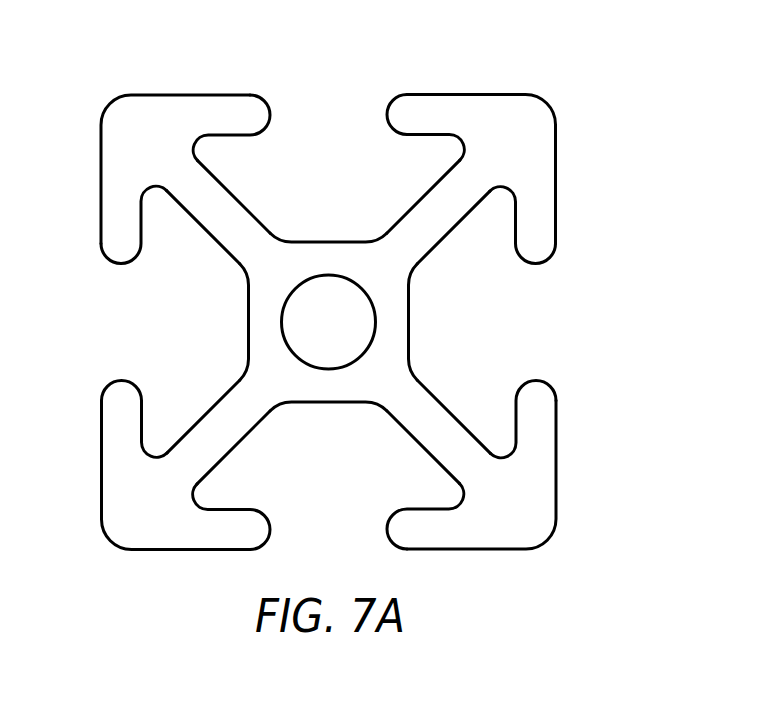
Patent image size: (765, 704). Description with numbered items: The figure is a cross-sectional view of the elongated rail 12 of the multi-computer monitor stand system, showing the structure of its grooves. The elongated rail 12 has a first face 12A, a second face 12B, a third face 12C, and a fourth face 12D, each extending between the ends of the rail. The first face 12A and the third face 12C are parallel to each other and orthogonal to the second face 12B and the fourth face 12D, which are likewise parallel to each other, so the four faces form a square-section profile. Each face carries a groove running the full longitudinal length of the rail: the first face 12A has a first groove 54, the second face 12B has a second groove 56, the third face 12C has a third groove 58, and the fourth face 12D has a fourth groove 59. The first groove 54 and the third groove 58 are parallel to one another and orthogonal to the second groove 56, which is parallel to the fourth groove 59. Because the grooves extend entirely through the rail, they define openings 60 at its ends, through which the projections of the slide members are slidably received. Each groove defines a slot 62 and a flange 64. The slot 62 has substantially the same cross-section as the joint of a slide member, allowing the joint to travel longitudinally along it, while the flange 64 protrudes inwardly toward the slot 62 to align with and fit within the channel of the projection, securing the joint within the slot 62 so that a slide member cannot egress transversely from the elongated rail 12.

The elongated rail 12 is at (366, 303).
The first face 12A is at (200, 95).
The second face 12B is at (556, 180).
The third face 12C is at (478, 549).
The fourth face 12D is at (100, 177).
The first groove 54 is at (330, 241).
The second groove 56 is at (410, 323).
The third groove 58 is at (328, 404).
The fourth groove 59 is at (247, 323).
The openings 60 is at (322, 110).
The slot 62 is at (229, 193).
The flange 64 is at (408, 115).